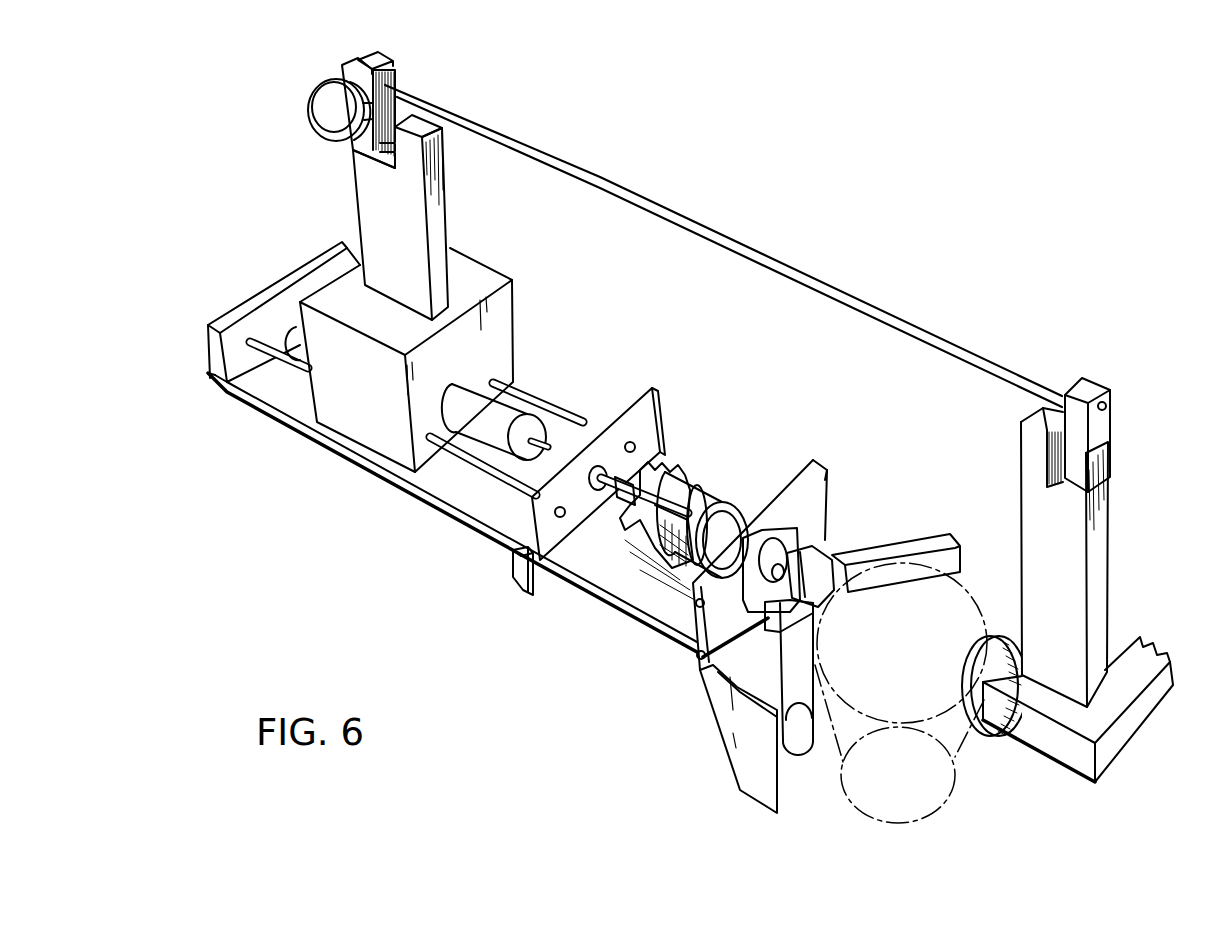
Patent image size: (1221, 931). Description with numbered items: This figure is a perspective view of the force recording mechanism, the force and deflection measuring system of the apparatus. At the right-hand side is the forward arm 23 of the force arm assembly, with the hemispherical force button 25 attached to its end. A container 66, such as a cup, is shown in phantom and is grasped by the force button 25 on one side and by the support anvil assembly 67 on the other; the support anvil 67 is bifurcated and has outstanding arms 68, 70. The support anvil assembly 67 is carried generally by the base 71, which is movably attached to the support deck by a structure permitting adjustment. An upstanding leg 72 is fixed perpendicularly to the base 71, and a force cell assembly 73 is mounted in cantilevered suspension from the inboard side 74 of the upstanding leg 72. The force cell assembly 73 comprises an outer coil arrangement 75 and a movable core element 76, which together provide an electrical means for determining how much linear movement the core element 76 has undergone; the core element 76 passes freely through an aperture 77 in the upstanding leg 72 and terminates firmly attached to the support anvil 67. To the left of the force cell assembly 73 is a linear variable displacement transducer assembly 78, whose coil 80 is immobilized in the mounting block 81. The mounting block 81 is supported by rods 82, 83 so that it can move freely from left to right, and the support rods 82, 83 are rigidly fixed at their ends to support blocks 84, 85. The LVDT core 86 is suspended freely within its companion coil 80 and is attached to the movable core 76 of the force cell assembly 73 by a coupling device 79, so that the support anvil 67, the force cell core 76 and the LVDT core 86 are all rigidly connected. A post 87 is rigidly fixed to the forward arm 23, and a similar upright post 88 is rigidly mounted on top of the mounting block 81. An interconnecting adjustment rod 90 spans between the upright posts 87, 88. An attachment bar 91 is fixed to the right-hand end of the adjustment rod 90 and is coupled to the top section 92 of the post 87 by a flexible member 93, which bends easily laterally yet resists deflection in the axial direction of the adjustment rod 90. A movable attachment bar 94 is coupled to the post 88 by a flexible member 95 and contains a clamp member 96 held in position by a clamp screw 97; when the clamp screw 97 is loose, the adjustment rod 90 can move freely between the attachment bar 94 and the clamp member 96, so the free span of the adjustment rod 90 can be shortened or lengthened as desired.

The forward arm 23 is at (1118, 728).
The force button 25 is at (992, 642).
The container 66 is at (940, 807).
The support anvil assembly 67 is at (827, 555).
The outstanding arm 68 is at (918, 537).
The outstanding arm 70 is at (805, 742).
The base 71 is at (640, 595).
The upstanding leg 72 is at (827, 473).
The force cell assembly 73 is at (702, 477).
The inboard side 74 is at (787, 485).
The outer coil arrangement 75 is at (667, 470).
The movable core element 76 is at (667, 513).
The aperture 77 is at (820, 515).
The linear variable displacement transducer (LVDT) assembly 78 is at (531, 361).
The coupling device 79 is at (652, 457).
The coil 80 is at (504, 430).
The mounting block 81 is at (513, 302).
The support rod 82 is at (563, 408).
The support rod 83 is at (478, 465).
The support block 84 is at (267, 288).
The support block 85 is at (650, 388).
The LVDT core 86 is at (608, 495).
The post 87 is at (1110, 553).
The upright post 88 is at (447, 208).
The adjustment rod 90 is at (705, 225).
The attachment bar 91 is at (1113, 442).
The top section 92 is at (1018, 432).
The flexible member 93 is at (1058, 455).
The movable attachment bar 94 is at (343, 70).
The flexible member 95 is at (393, 133).
The clamp member 96 is at (384, 54).
The clamp screw 97 is at (307, 108).